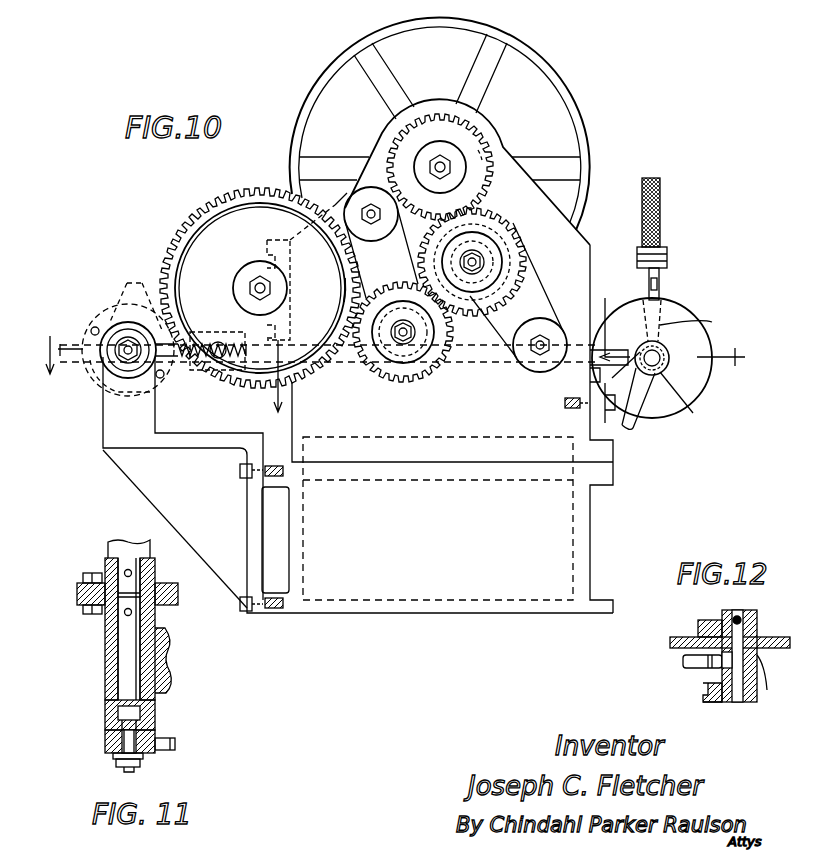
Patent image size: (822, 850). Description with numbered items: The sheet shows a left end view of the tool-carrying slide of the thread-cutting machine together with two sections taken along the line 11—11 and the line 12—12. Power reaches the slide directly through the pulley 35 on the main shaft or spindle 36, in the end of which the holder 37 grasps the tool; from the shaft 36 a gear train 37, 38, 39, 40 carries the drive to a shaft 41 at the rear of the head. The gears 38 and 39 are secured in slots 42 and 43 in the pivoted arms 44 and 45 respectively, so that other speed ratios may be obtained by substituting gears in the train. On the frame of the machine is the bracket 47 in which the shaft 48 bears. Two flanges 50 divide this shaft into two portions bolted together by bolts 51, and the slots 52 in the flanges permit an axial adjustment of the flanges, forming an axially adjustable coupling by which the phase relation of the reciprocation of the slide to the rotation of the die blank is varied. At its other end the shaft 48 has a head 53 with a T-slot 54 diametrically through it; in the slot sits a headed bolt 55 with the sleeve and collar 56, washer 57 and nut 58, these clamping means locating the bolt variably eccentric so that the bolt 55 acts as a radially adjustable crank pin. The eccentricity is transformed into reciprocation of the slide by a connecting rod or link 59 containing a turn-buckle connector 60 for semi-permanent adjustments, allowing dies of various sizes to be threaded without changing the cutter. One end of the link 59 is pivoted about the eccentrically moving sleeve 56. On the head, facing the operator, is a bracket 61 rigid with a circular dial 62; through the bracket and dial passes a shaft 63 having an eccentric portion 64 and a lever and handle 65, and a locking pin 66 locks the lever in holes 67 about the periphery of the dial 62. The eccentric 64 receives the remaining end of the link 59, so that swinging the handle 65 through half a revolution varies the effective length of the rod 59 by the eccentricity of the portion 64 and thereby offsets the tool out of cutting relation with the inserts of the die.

In FIG. 10, the pulley 35 is at (574, 123).
In FIG. 10, the main shaft 36 is at (432, 163).
In FIG. 10, the holder 37 is at (476, 187).
In FIG. 10, the gear 38 is at (513, 231).
In FIG. 10, the gear 39 is at (398, 381).
In FIG. 10, the gear 40 is at (308, 373).
In FIG. 10, the shaft 41 is at (253, 280).
In FIG. 10, the slot 42 is at (497, 270).
In FIG. 10, the slot 43 is at (447, 353).
In FIG. 10, the pivoted arm 44 is at (532, 303).
In FIG. 10, the pivoted arm 45 is at (381, 242).
In FIG. 10, the bracket 47 is at (120, 421).
In FIG. 11, the bracket 47 is at (168, 668).
In FIG. 11, the shaft 48 is at (125, 645).
In FIG. 10, the flanges 50 is at (88, 385).
In FIG. 11, the flanges 50 is at (189, 596).
In FIG. 11, the bolts 51 is at (91, 572).
In FIG. 10, the slots 52 is at (126, 327).
In FIG. 11, the head 53 is at (150, 722).
In FIG. 11, the T-slot 54 is at (140, 712).
In FIG. 11, the headed bolt 55 is at (120, 748).
In FIG. 11, the sleeve and collar 56 is at (155, 740).
In FIG. 11, the washer 57 is at (150, 756).
In FIG. 11, the nut 58 is at (138, 766).
In FIG. 11, the connecting rod 59 is at (176, 744).
In FIG. 12, the connecting rod 59 is at (700, 660).
In FIG. 10, the turn-buckle connector 60 is at (213, 328).
In FIG. 10, the bracket 61 is at (628, 405).
In FIG. 12, the bracket 61 is at (712, 702).
In FIG. 10, the circular dial 62 is at (700, 380).
In FIG. 10, the shaft 63 is at (691, 399).
In FIG. 12, the shaft 63 is at (738, 612).
In FIG. 10, the eccentric portion 64 is at (647, 372).
In FIG. 12, the eccentric portion 64 is at (715, 668).
In FIG. 10, the lever and handle 65 is at (712, 322).
In FIG. 10, the locking pin 66 is at (657, 272).
In FIG. 10, the holes 67 is at (662, 306).
In FIG. 10, the section line 11— 11 is at (147, 382).
In FIG. 10, the section line 12— 12 is at (684, 320).